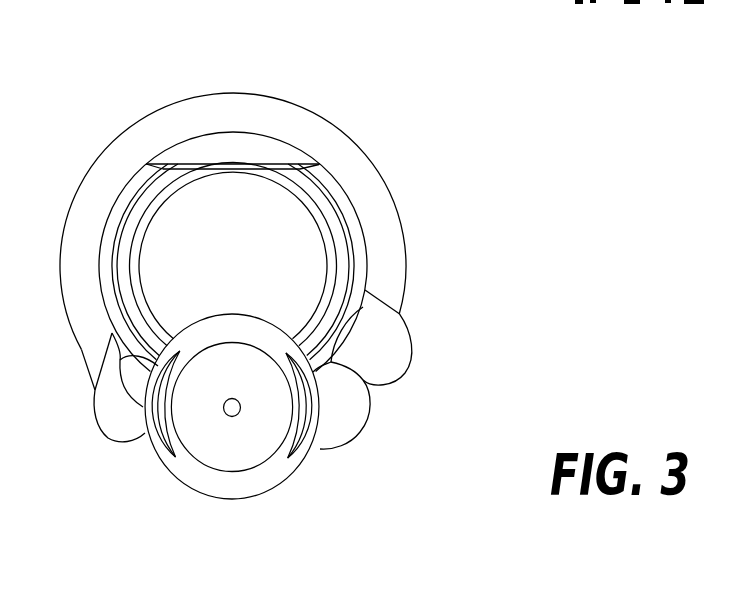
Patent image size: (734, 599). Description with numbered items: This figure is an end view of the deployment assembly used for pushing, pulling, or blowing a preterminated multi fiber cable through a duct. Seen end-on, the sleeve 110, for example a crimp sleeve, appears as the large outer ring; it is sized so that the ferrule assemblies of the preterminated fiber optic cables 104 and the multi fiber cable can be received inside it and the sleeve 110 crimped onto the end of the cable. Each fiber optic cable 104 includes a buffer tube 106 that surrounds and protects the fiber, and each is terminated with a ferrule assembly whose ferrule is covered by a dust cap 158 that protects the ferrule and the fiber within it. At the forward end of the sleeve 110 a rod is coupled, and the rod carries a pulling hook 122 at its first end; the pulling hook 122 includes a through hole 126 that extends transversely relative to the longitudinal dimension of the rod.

The fiber optic cable 104 is at (388, 415).
The buffer tube 106 is at (413, 353).
The sleeve 110 is at (245, 113).
The pulling hook 122 is at (213, 448).
The through hole 126 is at (303, 446).
The dust cap 158 is at (276, 200).